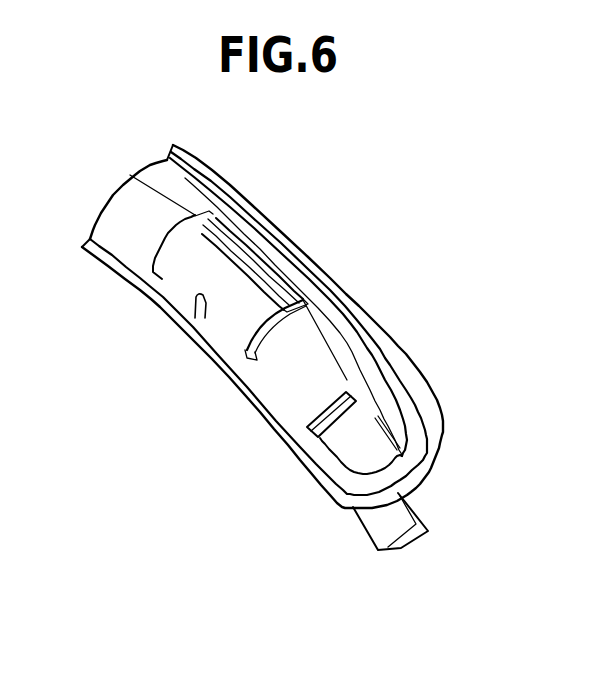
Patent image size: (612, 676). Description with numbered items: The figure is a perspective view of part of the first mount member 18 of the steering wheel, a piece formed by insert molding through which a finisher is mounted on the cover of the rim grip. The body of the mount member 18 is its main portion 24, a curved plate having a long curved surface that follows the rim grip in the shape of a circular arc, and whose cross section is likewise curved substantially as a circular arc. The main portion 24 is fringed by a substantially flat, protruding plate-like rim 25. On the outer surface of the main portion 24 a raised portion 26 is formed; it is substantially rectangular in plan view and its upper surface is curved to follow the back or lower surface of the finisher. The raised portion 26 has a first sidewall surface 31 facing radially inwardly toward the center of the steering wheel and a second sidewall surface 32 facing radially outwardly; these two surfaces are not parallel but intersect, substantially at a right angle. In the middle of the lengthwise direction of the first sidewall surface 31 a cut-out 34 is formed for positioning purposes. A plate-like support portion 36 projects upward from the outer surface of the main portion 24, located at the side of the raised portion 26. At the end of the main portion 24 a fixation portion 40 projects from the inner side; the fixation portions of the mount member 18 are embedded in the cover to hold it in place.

The first mount member 18 is at (447, 356).
The main portion 24 is at (343, 342).
The rim 25 is at (418, 432).
The raised portion 26 is at (114, 199).
The first sidewall surface 31 is at (247, 358).
The second sidewall surface 32 is at (307, 302).
The cut-out 34 is at (200, 312).
The support portion 36 is at (323, 440).
The fixation portion 40 is at (383, 527).